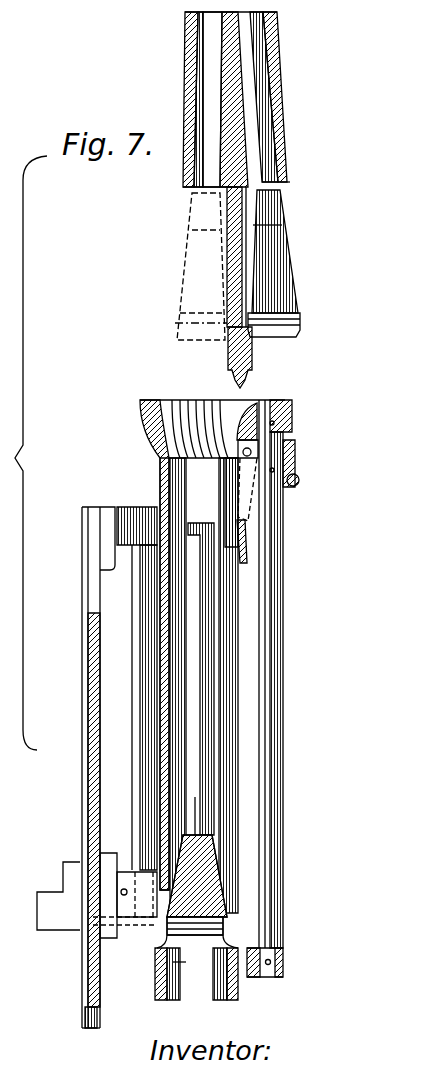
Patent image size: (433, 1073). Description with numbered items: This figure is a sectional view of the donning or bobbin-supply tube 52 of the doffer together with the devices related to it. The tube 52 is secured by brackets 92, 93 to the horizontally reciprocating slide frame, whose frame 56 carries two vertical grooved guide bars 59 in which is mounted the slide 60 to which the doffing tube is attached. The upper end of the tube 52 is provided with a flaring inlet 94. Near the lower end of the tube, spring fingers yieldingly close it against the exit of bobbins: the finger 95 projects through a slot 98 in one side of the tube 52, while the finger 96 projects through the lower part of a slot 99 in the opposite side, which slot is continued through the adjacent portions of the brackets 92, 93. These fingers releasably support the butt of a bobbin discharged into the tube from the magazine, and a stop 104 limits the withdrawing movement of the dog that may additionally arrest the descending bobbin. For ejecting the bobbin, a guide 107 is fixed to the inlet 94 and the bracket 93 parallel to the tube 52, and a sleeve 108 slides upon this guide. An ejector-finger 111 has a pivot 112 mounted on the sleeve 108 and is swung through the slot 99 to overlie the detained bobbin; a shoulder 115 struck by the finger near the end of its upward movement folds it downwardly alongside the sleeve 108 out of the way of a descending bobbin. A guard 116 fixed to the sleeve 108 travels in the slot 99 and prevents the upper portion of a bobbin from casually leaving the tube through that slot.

The donning or bobbin-supply tube 52 is at (163, 720).
The frame 56 is at (45, 906).
The vertical grooved guide bars 59 is at (90, 587).
The slide 60 is at (90, 672).
The bracket 92 is at (134, 517).
The bracket 93 is at (125, 880).
The flaring inlet 94 is at (153, 414).
The spring finger 95 is at (167, 907).
The spring finger 96 is at (222, 892).
The slot 98 is at (165, 903).
The slot 99 is at (238, 697).
The stop 104 is at (121, 891).
The guide 107 is at (270, 625).
The sleeve 108 is at (291, 450).
The ejector-finger 111 is at (250, 503).
The pivot 112 is at (239, 445).
The shoulder 115 is at (238, 454).
The guard 116 is at (248, 538).